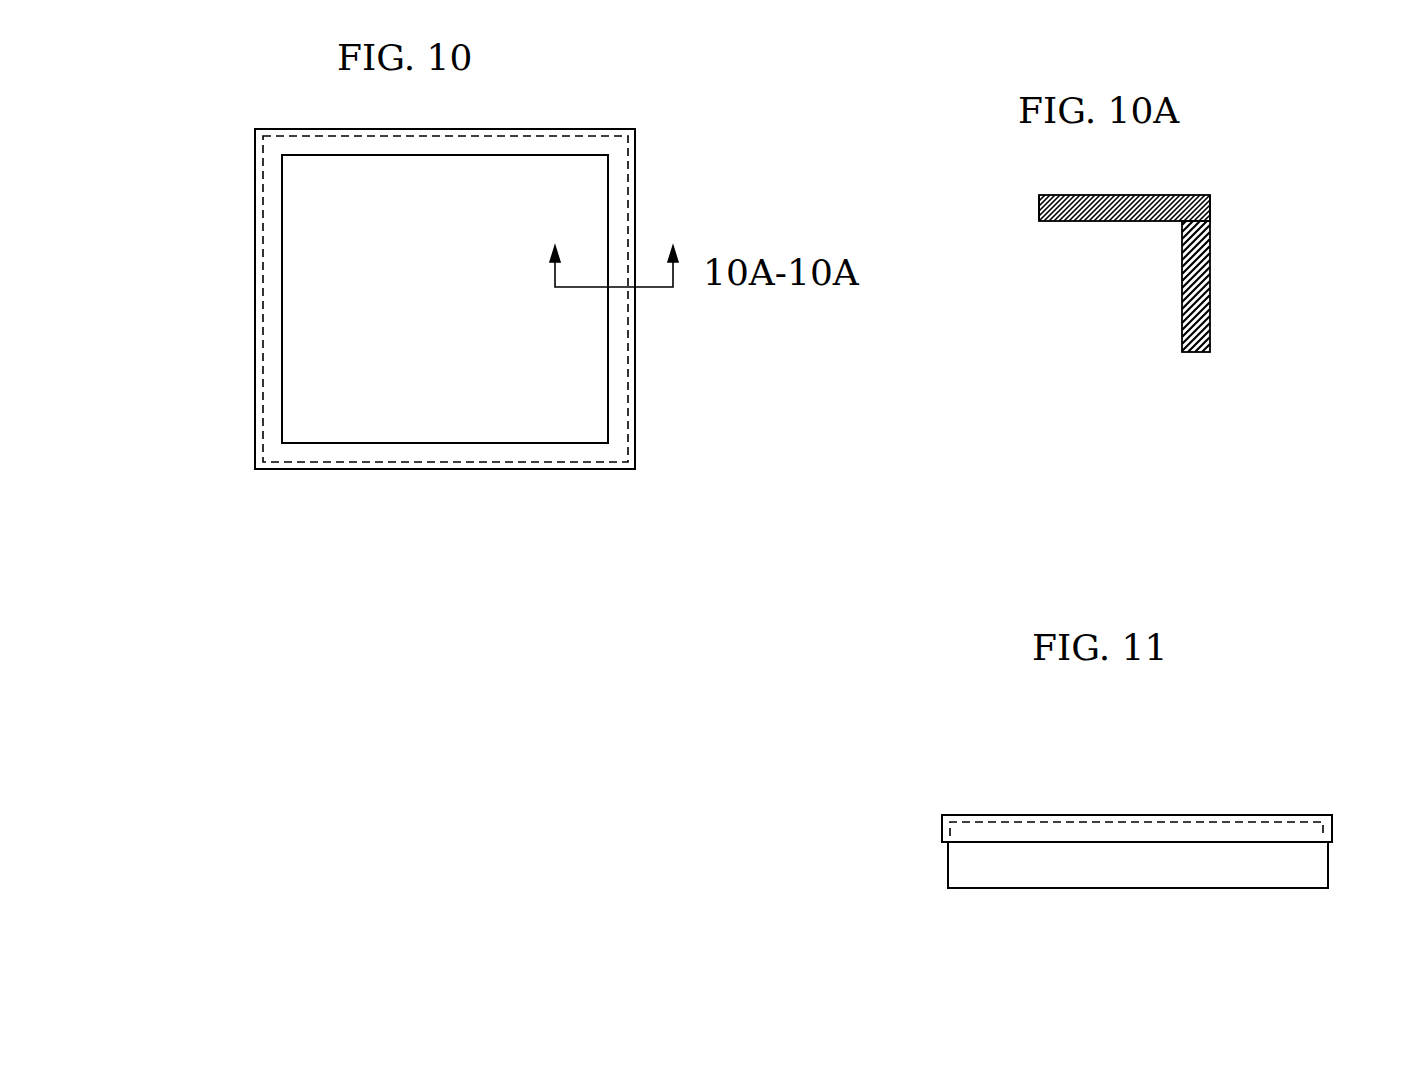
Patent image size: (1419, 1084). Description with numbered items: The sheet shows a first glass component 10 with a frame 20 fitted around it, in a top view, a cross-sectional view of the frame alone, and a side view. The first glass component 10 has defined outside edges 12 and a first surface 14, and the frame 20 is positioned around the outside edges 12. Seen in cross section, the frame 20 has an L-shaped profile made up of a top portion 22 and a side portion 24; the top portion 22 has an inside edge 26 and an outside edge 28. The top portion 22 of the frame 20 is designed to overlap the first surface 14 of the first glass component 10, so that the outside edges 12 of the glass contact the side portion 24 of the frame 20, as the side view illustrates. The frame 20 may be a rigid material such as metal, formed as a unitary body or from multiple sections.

In FIG. 10, the first glass component 10 is at (322, 417).
In FIG. 11, the first glass component 10 is at (948, 873).
In FIG. 10, the outside edges 12 is at (533, 133).
In FIG. 11, the outside edges 12 is at (942, 837).
In FIG. 10, the first surface 14 is at (469, 312).
In FIG. 10, the frame 20 is at (637, 155).
In FIG. 10A, the frame 20 is at (1148, 279).
In FIG. 11, the frame 20 is at (1293, 815).
In FIG. 10A, the top portion 22 is at (1090, 221).
In FIG. 10A, the side portion 24 is at (1210, 327).
In FIG. 10A, the inside edge 26 is at (1038, 208).
In FIG. 10A, the outside edge 28 is at (1210, 208).